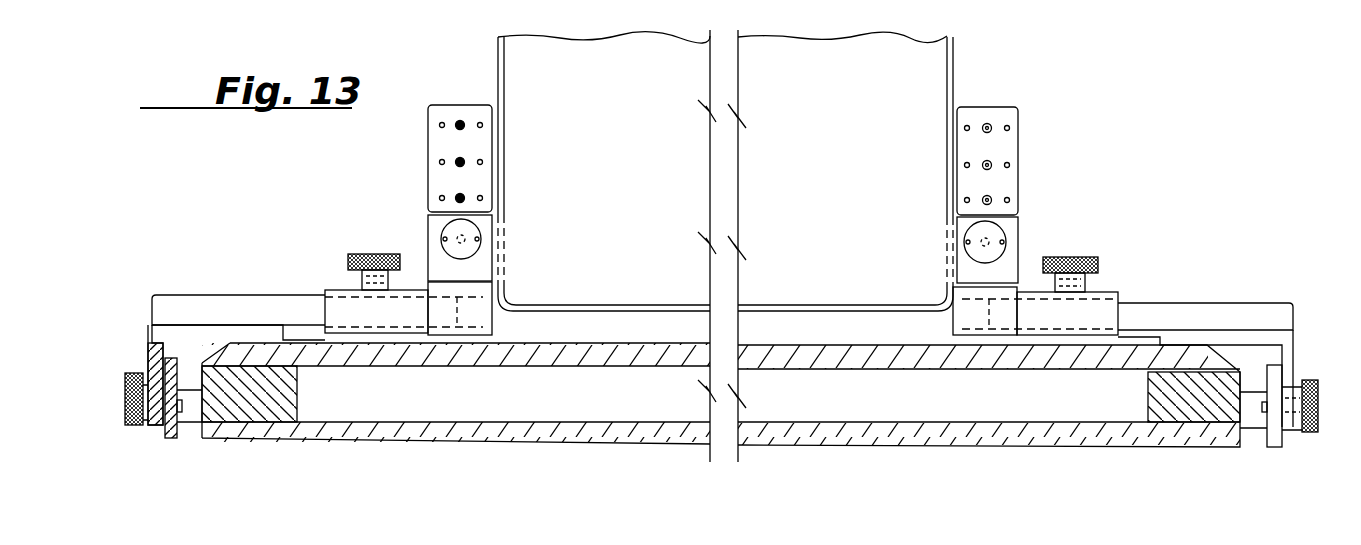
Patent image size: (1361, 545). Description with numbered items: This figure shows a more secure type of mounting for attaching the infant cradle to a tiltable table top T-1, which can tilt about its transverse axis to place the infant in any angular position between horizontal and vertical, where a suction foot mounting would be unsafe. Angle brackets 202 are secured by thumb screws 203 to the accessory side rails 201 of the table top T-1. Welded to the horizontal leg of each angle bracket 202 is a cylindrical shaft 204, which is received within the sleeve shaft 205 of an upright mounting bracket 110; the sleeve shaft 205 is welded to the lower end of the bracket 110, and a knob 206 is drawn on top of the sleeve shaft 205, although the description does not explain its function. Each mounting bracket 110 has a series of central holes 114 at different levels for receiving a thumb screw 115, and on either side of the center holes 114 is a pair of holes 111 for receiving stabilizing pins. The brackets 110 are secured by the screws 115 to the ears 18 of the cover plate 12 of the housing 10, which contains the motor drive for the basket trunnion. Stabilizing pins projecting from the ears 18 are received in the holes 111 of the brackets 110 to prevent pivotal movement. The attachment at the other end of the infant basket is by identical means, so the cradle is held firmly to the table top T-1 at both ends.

The housing 10 is at (966, 47).
The cover plate 12 is at (555, 55).
The ears 18 is at (432, 220).
The mounting bracket 110 is at (441, 108).
The holes 111 is at (439, 160).
The central holes 114 is at (461, 121).
The thumb screw 115 is at (450, 238).
The accessory side rails 201 is at (170, 440).
The angle bracket 202 is at (150, 333).
The thumb screws 203 is at (130, 396).
The cylindrical shaft 204 is at (242, 300).
The sleeve shaft 205 is at (332, 291).
The clamp knob 206 is at (366, 254).
The table top T-1 is at (356, 448).